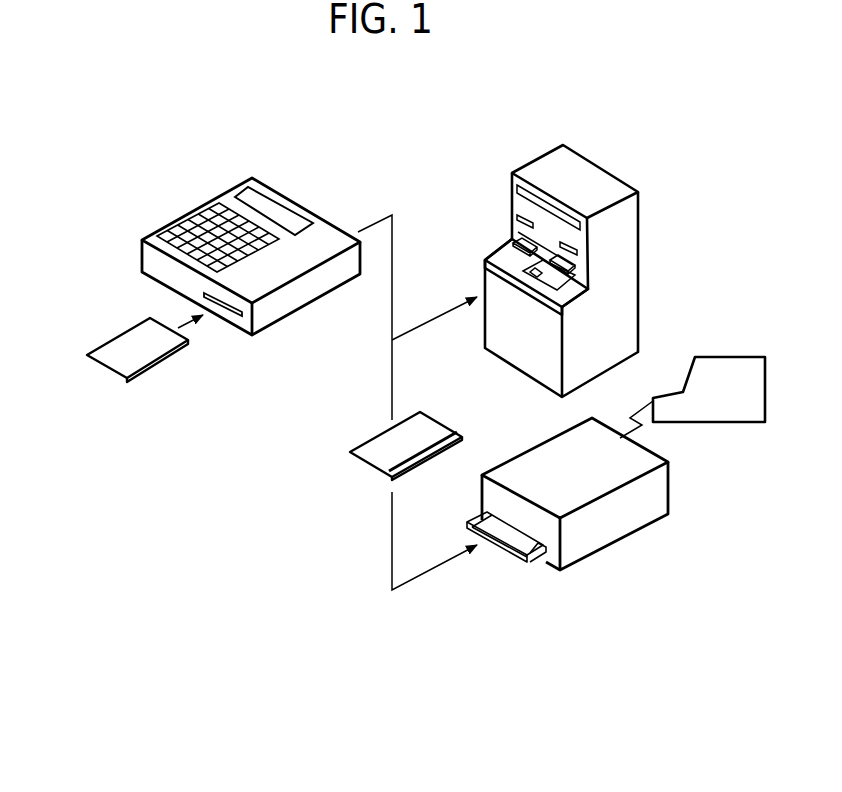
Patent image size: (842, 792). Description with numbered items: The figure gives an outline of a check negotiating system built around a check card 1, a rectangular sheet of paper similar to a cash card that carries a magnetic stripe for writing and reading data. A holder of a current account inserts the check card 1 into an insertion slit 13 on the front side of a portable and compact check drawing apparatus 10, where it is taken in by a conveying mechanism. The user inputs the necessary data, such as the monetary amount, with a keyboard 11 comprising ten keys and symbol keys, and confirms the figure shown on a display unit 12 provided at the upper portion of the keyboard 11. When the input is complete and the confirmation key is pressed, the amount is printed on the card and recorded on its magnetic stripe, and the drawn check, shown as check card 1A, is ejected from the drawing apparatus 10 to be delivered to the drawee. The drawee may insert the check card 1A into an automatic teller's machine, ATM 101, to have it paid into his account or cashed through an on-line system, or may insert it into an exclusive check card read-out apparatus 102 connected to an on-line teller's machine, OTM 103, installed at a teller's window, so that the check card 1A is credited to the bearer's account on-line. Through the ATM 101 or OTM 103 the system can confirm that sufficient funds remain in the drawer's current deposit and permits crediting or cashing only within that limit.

The check drawing apparatus 10 is at (185, 200).
The keyboard 11 is at (178, 250).
The display unit 12 is at (297, 203).
The insertion slit 13 is at (240, 315).
The check card 1 is at (145, 373).
The check card (drawn check) 1A is at (440, 423).
The automatic teller's machine (ATM) 101 is at (642, 313).
The check card read-out apparatus 102 is at (628, 538).
The on-line teller's machine (OTM) 103 is at (725, 358).